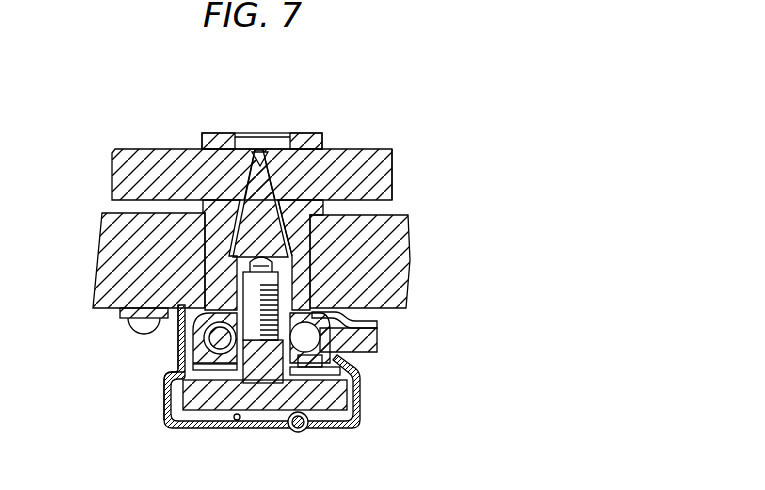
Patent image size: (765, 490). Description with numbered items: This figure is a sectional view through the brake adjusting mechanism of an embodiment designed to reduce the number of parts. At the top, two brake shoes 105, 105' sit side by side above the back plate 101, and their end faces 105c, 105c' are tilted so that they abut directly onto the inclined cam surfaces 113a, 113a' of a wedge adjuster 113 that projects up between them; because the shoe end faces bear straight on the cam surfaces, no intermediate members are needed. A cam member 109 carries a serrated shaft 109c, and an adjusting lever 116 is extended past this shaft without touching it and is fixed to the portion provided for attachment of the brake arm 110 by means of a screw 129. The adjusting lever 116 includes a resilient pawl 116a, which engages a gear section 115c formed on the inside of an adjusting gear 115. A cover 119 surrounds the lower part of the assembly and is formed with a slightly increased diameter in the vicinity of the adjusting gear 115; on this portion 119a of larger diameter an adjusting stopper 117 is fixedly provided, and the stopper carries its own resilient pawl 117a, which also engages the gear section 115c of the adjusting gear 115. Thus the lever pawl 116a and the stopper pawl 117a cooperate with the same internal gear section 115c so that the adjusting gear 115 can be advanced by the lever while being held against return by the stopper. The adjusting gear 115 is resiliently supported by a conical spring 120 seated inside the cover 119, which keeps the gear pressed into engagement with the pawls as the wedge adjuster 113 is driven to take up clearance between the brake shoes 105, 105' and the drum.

The brake shoe 105 is at (228, 143).
The brake shoe 105' is at (428, 158).
The end face 105c is at (231, 145).
The end face 105c' is at (315, 147).
The cam member 109 is at (302, 133).
The serrated shaft 109c is at (298, 432).
The wedge adjuster 113 is at (288, 237).
The inclined cam surface 113a is at (216, 180).
The inclined cam surface 113a' is at (342, 185).
The back plate 101 is at (387, 262).
The brake arm 110 is at (375, 333).
The adjusting lever 116 is at (340, 362).
The resilient pawl 116a is at (360, 378).
The adjusting gear 115 is at (345, 407).
The gear section 115c is at (178, 355).
The adjusting stopper 117 is at (172, 425).
The resilient pawl 117a is at (172, 364).
The cover 119 is at (246, 420).
The portion of larger diameter 119a is at (170, 393).
The conical spring 120 is at (218, 422).
The screw 129 is at (310, 378).